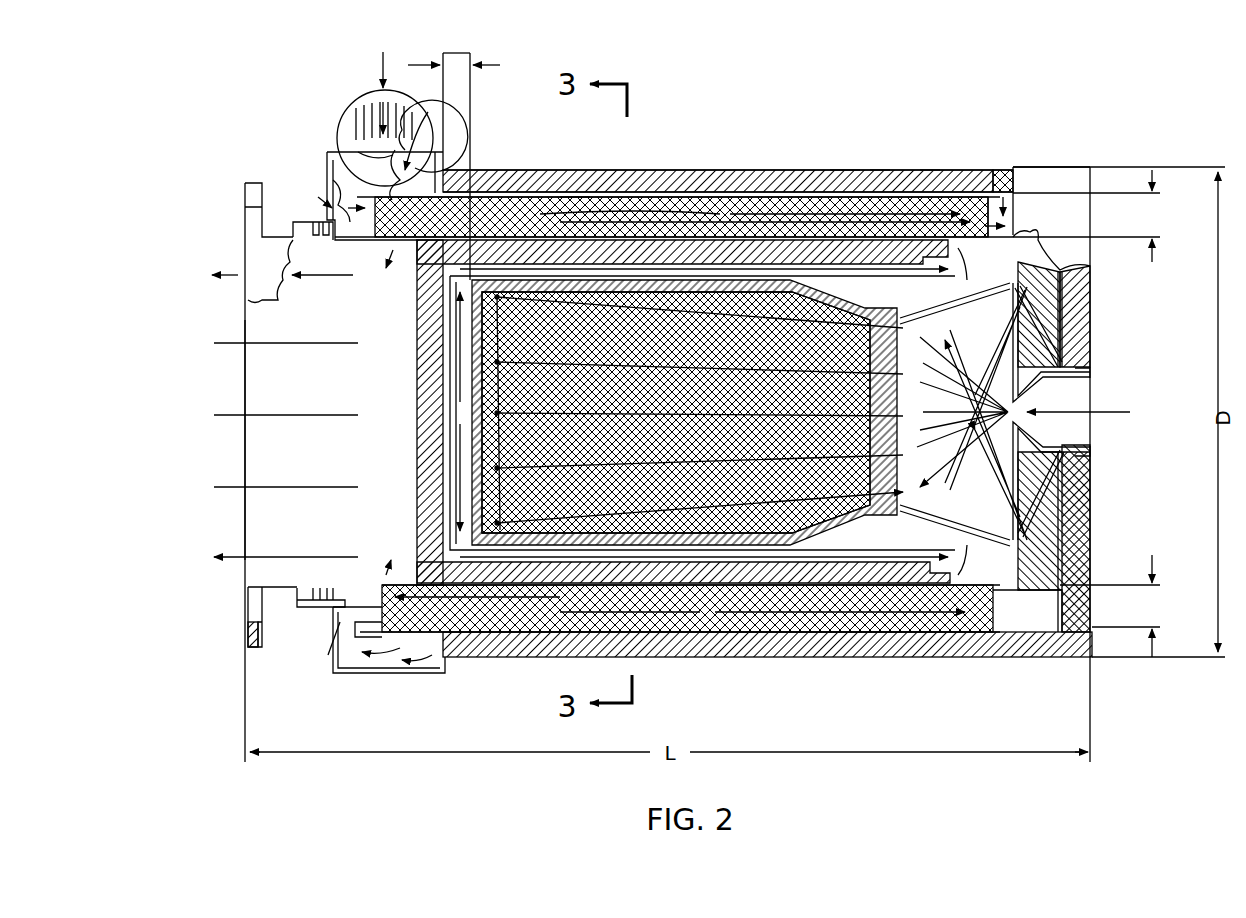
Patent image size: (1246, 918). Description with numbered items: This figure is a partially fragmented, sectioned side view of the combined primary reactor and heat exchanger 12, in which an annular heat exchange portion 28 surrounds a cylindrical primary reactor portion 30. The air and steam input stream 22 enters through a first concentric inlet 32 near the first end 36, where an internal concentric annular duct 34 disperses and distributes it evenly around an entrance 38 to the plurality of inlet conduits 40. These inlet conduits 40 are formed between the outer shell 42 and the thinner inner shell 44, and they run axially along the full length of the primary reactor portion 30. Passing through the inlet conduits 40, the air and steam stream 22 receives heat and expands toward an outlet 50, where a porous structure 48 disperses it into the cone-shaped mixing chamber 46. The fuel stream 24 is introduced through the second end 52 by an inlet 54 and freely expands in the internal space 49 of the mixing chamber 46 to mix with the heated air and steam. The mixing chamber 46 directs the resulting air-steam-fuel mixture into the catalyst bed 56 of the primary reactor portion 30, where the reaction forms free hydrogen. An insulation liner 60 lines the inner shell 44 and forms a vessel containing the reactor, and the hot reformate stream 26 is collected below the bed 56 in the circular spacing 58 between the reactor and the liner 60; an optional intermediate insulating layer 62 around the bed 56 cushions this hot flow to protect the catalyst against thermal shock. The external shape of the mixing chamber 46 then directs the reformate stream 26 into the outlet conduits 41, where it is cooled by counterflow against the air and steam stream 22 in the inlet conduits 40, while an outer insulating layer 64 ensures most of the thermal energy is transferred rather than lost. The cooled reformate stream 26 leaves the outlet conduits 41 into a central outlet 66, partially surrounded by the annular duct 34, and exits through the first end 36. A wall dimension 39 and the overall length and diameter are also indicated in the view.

The combined primary reactor and heat exchanger 12 is at (772, 150).
The air and steam input stream 22 is at (399, 98).
The fuel stream 24 is at (1100, 412).
The reformate stream 26 is at (583, 413).
The heat exchange portion 28 is at (510, 180).
The primary reactor portion 30 is at (573, 197).
The first concentric inlet 32 is at (357, 105).
The internal concentric annular duct 34 is at (378, 677).
The first end 36 is at (243, 213).
The entrance 38 is at (332, 205).
The wall thickness dimension 39 is at (1151, 413).
The inlet conduits 40 is at (670, 226).
The outlet conduits 41 is at (674, 619).
The outer shell 42 is at (880, 170).
The inner shell 44 is at (930, 170).
The mixing chamber 46 is at (967, 525).
The porous structure 48 is at (1090, 340).
The internal space 49 is at (972, 330).
The outlet 50 is at (1003, 192).
The second end 52 is at (1097, 303).
The inlet 54 is at (1047, 385).
The catalyst bed 56 is at (670, 402).
The circular spacing 58 is at (368, 306).
The insulation liner 60 is at (730, 250).
The intermediate insulating layer 62 is at (640, 280).
The outer insulating layer 64 is at (822, 170).
The central outlet 66 is at (289, 392).